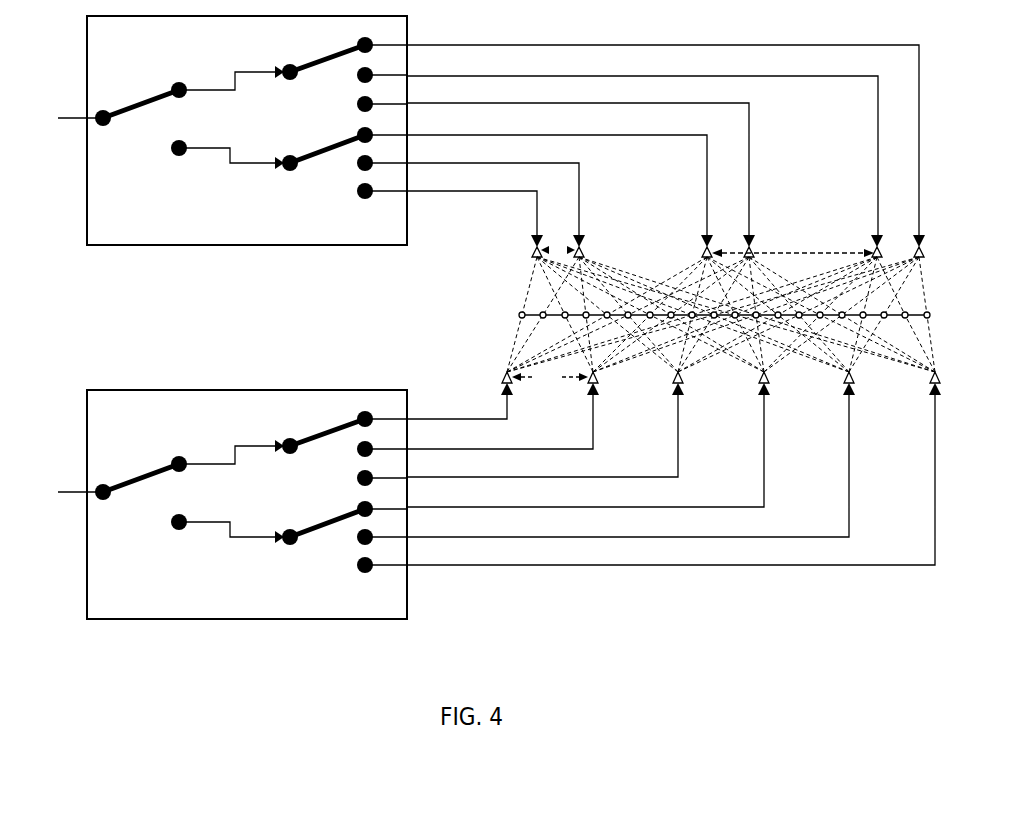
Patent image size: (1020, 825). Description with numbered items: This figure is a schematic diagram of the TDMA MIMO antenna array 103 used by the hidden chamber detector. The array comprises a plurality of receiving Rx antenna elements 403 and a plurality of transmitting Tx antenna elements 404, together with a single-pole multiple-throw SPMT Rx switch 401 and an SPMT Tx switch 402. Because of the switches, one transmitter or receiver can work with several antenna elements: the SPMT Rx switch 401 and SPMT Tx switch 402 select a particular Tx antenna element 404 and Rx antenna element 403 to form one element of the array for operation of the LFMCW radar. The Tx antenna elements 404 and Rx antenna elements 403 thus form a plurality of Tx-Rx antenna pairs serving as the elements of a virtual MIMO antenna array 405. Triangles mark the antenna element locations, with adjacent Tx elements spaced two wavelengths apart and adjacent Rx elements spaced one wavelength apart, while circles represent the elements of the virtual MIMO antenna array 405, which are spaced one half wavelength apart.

The TDMA MIMO antenna array 103 is at (908, 40).
The SPMT Rx switch 401 is at (165, 289).
The SPMT Tx switch 402 is at (165, 651).
The Rx antenna elements 403 is at (489, 262).
The Tx antenna elements 404 is at (489, 392).
The virtual MIMO antenna array 405 is at (489, 324).